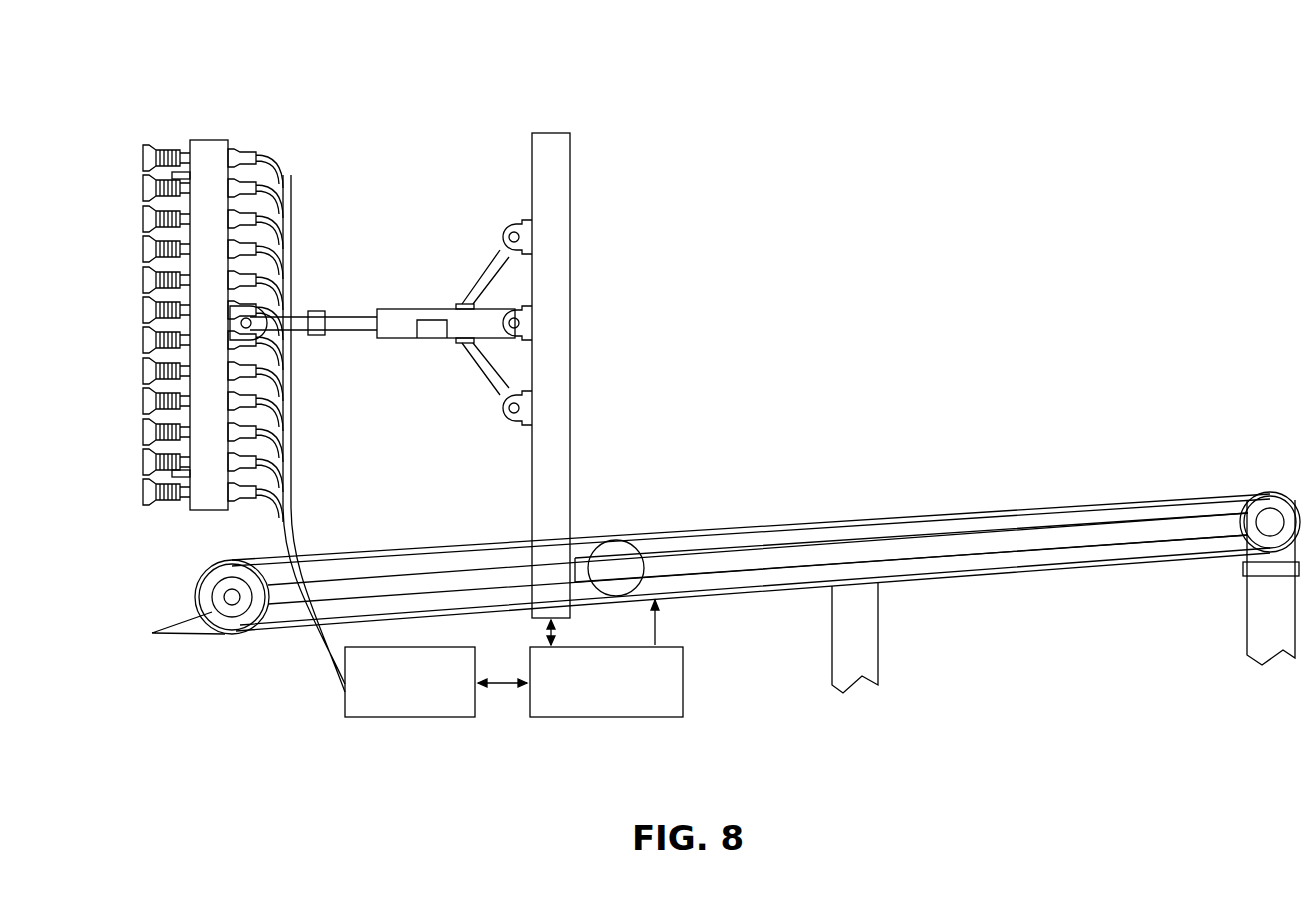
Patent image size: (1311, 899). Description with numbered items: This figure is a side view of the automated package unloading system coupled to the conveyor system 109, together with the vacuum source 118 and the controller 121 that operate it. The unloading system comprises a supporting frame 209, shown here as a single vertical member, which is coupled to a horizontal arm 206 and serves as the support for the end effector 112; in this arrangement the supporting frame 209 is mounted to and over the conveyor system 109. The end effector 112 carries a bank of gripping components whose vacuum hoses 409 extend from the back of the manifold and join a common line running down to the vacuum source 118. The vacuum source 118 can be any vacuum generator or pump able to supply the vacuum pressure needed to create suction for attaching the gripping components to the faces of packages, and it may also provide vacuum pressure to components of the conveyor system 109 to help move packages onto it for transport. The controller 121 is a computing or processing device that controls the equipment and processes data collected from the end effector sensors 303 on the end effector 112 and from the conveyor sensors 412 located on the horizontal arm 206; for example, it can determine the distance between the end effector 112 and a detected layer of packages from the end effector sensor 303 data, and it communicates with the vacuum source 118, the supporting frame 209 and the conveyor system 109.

The end effector 112 is at (165, 85).
The end effector sensors 303 is at (150, 482).
The vacuum hose 409 is at (295, 512).
The horizontal arms 206 is at (408, 313).
The conveyor sensors 412 is at (432, 332).
The supporting frame 209 is at (553, 223).
The conveyor system 109 is at (920, 603).
The vacuum source 118 is at (396, 720).
The controller 121 is at (688, 708).